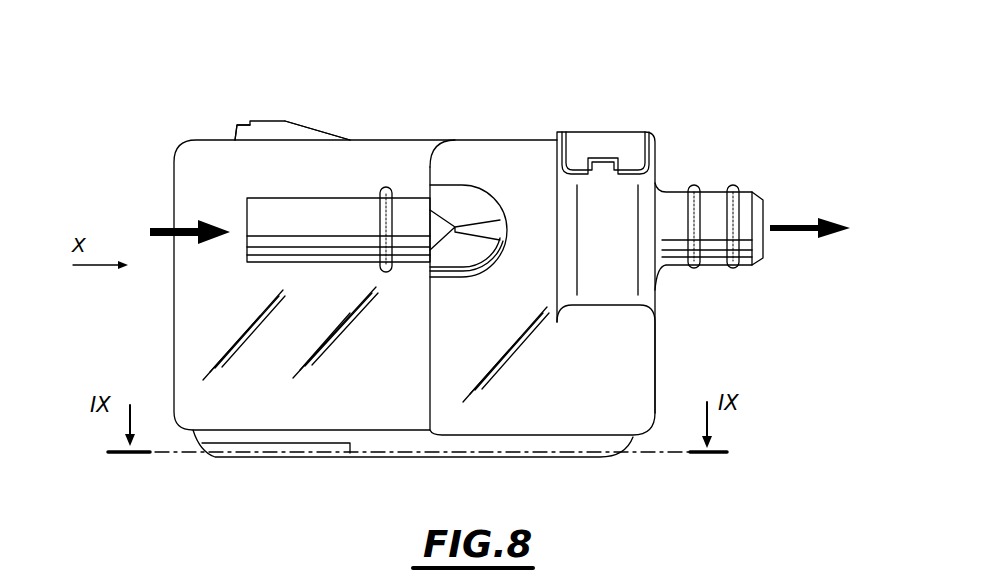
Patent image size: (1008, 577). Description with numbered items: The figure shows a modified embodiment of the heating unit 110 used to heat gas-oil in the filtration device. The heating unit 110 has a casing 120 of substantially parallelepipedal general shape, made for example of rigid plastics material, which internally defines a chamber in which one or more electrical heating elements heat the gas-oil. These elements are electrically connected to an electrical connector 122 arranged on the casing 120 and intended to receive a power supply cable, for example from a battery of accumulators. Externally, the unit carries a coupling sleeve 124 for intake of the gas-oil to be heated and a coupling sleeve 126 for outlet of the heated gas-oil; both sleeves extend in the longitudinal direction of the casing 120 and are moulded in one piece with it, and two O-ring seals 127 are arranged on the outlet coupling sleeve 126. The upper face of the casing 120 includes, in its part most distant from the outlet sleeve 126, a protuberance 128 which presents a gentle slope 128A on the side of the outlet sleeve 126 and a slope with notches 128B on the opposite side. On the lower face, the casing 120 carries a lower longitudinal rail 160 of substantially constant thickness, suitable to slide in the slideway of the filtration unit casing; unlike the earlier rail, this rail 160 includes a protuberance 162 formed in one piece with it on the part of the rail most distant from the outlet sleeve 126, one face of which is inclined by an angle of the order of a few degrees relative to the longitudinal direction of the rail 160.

The heating unit 110 is at (160, 308).
The casing 120 is at (207, 370).
The electrical connector 122 is at (641, 170).
The coupling sleeve 124 is at (303, 236).
The coupling sleeve 126 is at (717, 203).
The O-ring seals 127 is at (695, 268).
The protuberance 128 is at (291, 108).
The gentle slope 128A is at (330, 128).
The slope with notches 128B is at (243, 122).
The lower longitudinal rail 160 is at (410, 442).
The protuberance 162 is at (252, 450).